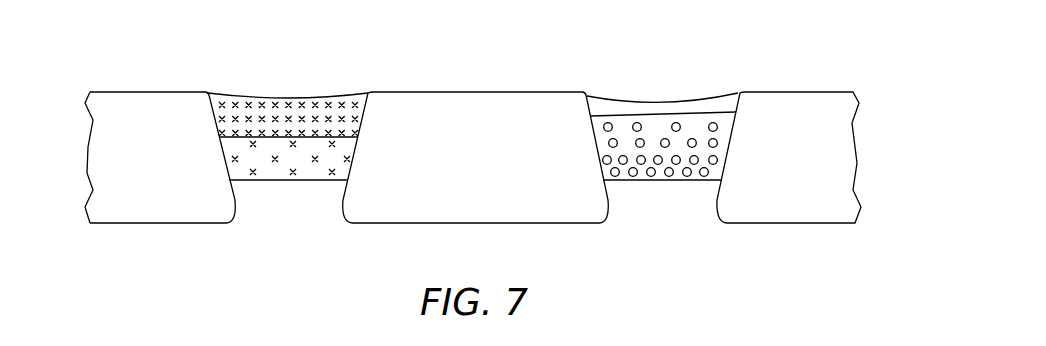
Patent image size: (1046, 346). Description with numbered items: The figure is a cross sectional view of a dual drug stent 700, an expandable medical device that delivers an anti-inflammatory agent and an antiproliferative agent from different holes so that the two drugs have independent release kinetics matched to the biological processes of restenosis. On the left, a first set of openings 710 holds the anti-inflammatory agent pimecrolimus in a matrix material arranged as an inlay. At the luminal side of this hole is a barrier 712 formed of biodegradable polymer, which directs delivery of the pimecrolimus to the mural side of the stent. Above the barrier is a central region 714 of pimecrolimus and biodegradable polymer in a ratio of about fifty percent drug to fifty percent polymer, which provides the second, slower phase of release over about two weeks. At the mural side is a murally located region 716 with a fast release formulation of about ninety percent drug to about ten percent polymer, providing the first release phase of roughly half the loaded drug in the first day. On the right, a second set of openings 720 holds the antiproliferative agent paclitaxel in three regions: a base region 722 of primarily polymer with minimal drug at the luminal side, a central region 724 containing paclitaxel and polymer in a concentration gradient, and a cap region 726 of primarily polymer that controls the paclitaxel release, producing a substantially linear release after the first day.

The dual drug stent 700 is at (215, 277).
The first set of openings 710 is at (329, 114).
The barrier 712 is at (330, 203).
The central region 714 is at (348, 169).
The murally located region 716 is at (357, 127).
The second set of openings 720 is at (704, 114).
The base region 722 is at (702, 203).
The central region 724 is at (715, 154).
The cap region 726 is at (718, 111).